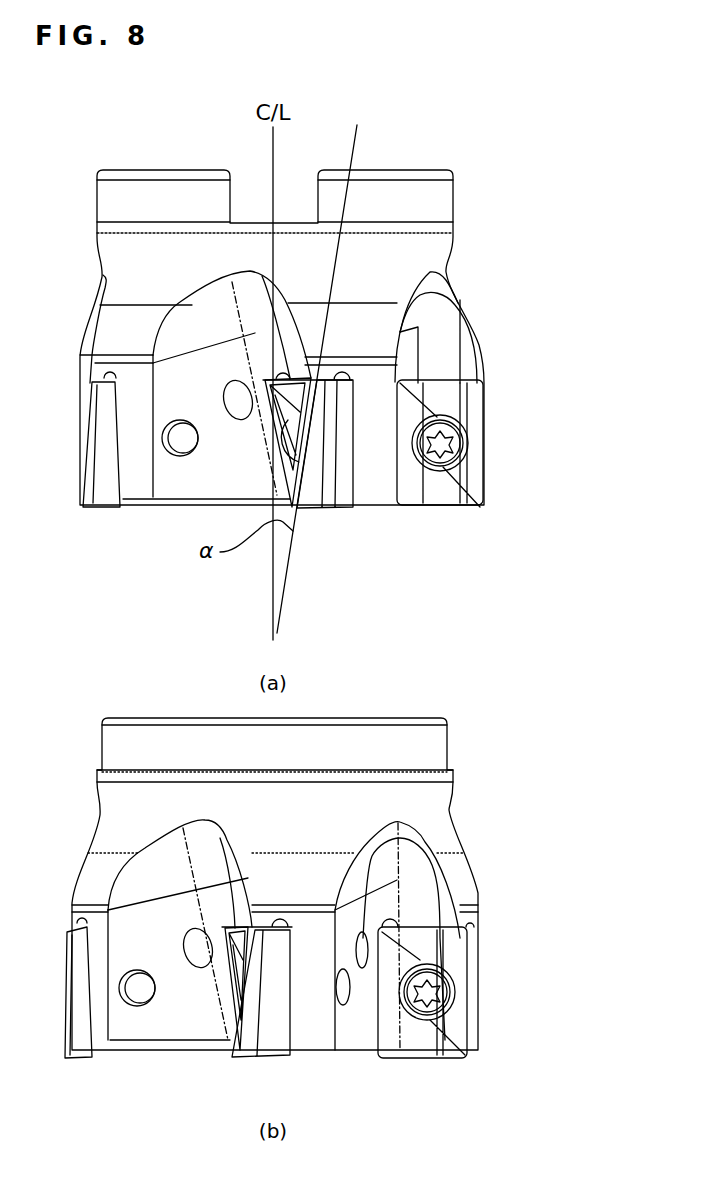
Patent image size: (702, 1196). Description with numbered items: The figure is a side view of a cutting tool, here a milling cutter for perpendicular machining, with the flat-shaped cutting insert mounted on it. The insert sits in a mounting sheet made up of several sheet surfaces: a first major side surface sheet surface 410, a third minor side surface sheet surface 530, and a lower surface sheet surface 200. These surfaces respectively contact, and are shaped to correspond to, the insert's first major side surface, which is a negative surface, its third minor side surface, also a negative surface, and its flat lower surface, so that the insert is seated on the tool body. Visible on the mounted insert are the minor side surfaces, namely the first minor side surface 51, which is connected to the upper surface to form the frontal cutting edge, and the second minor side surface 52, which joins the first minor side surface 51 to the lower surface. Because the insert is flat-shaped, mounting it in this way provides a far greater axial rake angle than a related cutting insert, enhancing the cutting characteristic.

The first minor side surface 51 is at (310, 510).
The second minor side surface 52 is at (335, 510).
The lower surface sheet surface 200 is at (290, 1010).
The first major side surface sheet surface 410 is at (397, 465).
The third minor side surface sheet surface 530 is at (483, 380).